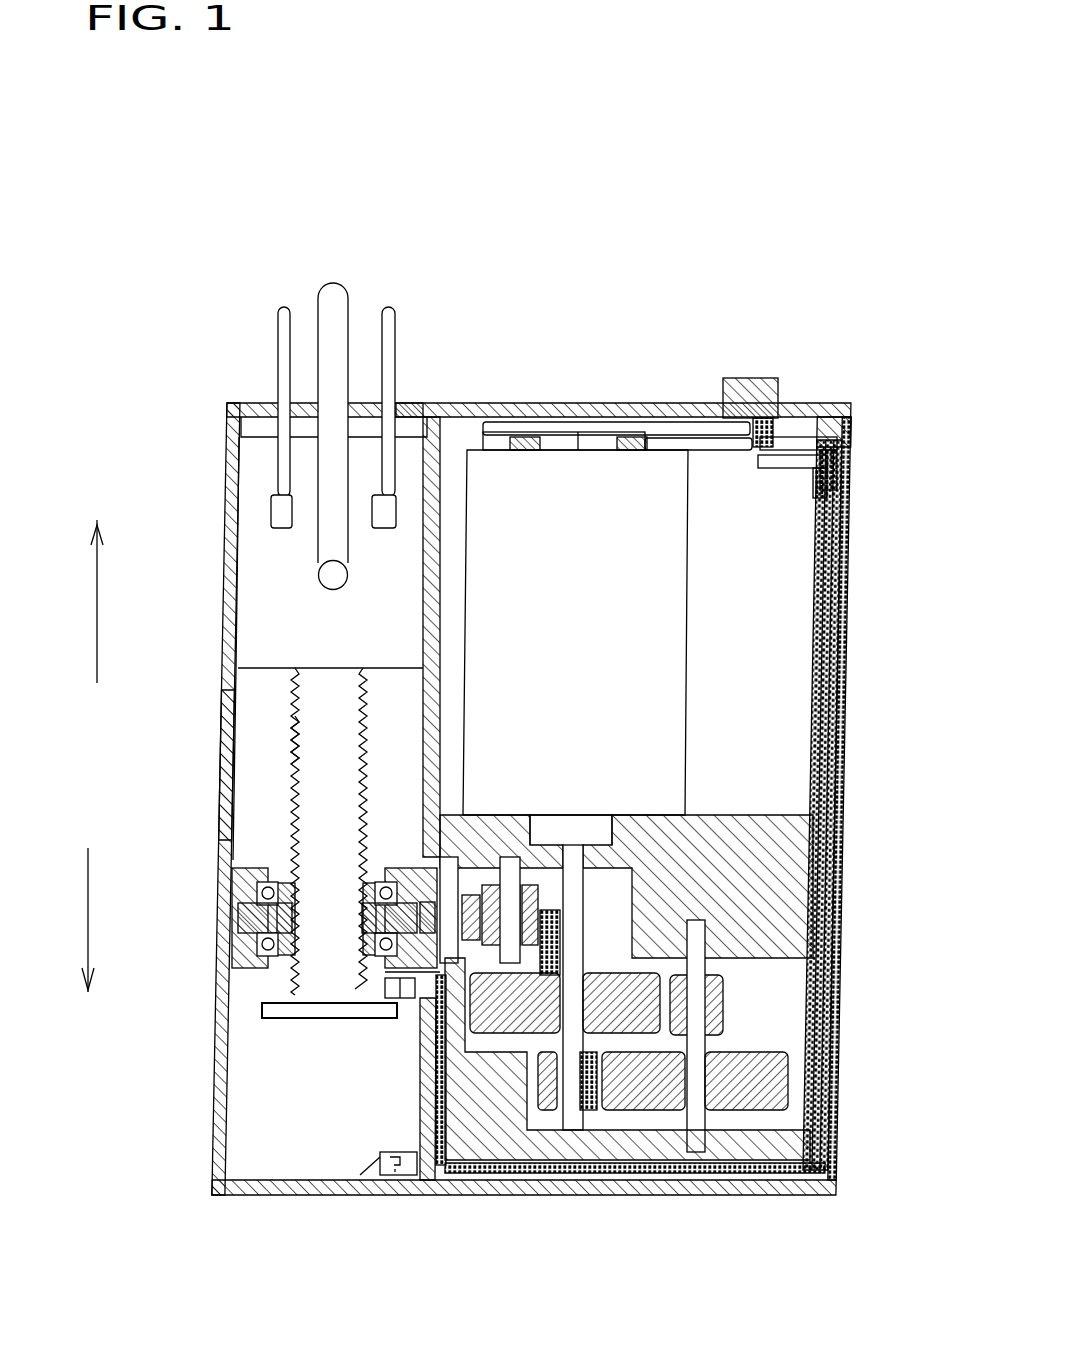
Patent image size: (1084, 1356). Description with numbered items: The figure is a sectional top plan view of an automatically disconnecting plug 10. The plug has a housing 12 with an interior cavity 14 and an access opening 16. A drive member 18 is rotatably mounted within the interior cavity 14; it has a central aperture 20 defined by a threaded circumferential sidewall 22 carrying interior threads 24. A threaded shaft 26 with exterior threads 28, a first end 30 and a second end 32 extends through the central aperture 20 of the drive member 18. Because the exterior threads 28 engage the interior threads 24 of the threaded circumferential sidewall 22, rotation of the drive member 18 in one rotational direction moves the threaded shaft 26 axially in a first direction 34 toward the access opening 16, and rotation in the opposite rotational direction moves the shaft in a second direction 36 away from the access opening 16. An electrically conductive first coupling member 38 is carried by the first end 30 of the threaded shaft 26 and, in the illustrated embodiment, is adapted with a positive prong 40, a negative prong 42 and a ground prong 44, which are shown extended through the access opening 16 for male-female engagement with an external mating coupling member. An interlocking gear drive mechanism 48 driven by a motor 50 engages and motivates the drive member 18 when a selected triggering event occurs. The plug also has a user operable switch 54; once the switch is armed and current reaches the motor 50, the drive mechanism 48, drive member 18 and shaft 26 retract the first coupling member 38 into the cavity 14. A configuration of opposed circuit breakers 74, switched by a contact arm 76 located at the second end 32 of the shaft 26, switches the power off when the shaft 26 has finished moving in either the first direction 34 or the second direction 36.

The automatically disconnecting plug 10 is at (738, 237).
The housing 12 is at (640, 1195).
The interior cavity 14 is at (257, 764).
The access opening 16 is at (404, 378).
The drive member 18 is at (245, 908).
The central aperture 20 is at (318, 900).
The threaded circumferential sidewall 22 is at (255, 940).
The interior threads 24 is at (362, 920).
The threaded shaft 26 is at (255, 764).
The exterior threads 28 is at (293, 735).
The first end 30 is at (325, 682).
The second end 32 is at (315, 993).
The first direction 34 is at (90, 632).
The second direction 36 is at (89, 893).
The first coupling member 38 is at (258, 543).
The positive prong 40 is at (278, 352).
The negative prong 42 is at (397, 337).
The ground prong 44 is at (347, 322).
The interlocking gear drive mechanism 48 is at (630, 929).
The motor 50 is at (604, 633).
The user operable switch 54 is at (768, 380).
The opposed circuit breakers 74 is at (408, 1018).
The contact arm 76 is at (373, 1020).